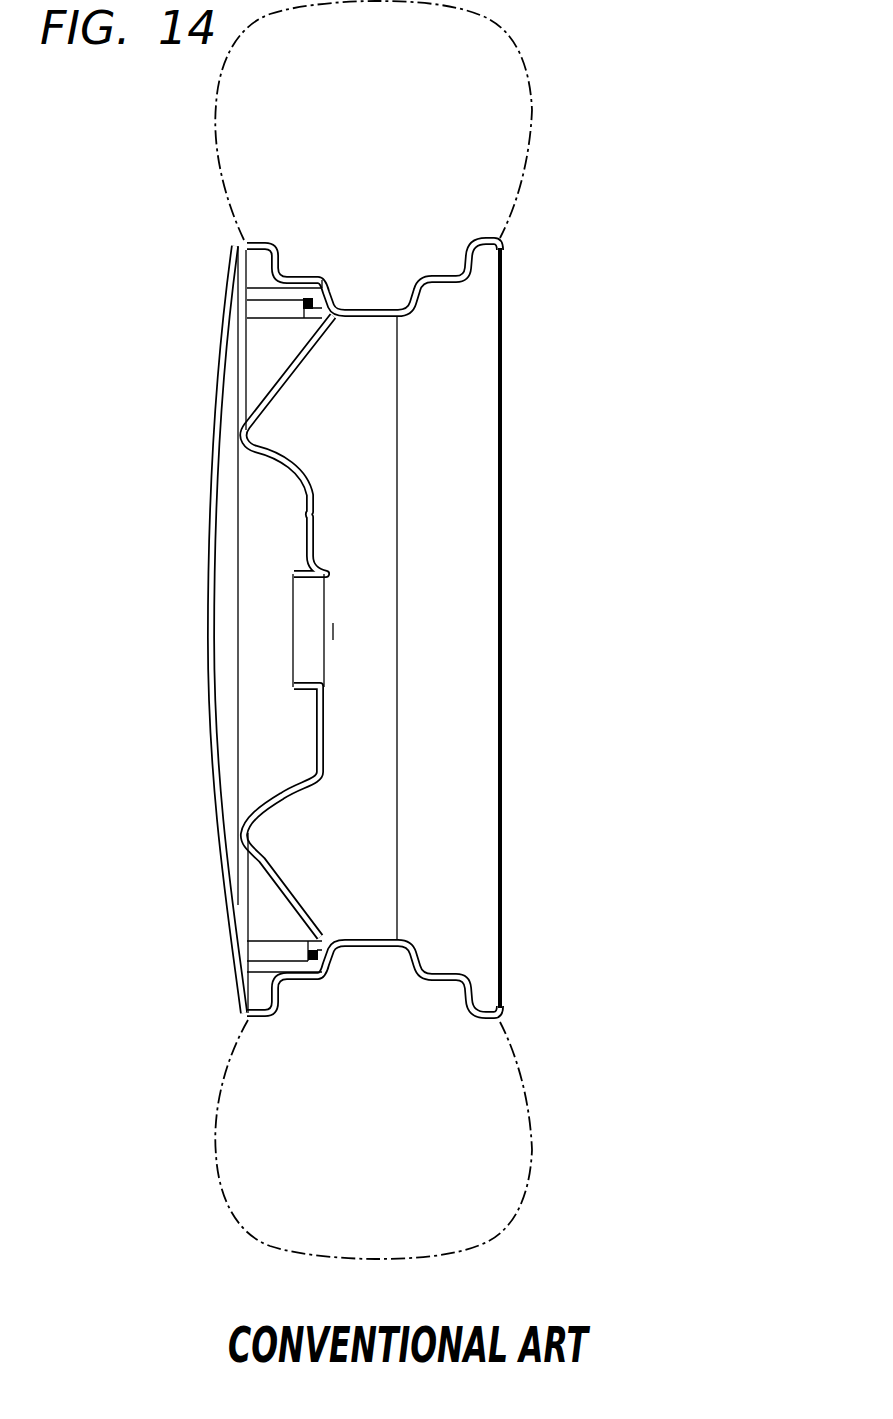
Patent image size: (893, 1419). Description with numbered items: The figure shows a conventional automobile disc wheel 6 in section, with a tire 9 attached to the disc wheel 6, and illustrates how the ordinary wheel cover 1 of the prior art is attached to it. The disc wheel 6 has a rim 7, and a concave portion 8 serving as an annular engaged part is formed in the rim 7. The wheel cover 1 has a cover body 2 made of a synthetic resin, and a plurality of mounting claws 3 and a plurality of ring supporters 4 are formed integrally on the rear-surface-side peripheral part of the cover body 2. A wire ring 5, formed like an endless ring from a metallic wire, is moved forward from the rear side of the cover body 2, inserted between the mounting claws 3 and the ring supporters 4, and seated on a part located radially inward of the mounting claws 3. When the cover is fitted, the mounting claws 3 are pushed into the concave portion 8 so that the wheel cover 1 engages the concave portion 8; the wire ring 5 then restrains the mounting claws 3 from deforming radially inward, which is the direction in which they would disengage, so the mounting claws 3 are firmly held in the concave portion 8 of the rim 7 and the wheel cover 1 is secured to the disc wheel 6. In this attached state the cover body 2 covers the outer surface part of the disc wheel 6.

The wheel cover 1 is at (209, 554).
The cover body 2 is at (213, 484).
The mounting claws 3 is at (340, 306).
The ring supporters 4 is at (281, 318).
The wire ring 5 is at (320, 320).
The disc wheel 6 is at (504, 618).
The rim 7 is at (432, 275).
The concave portion 8 is at (321, 279).
The tire 9 is at (216, 118).